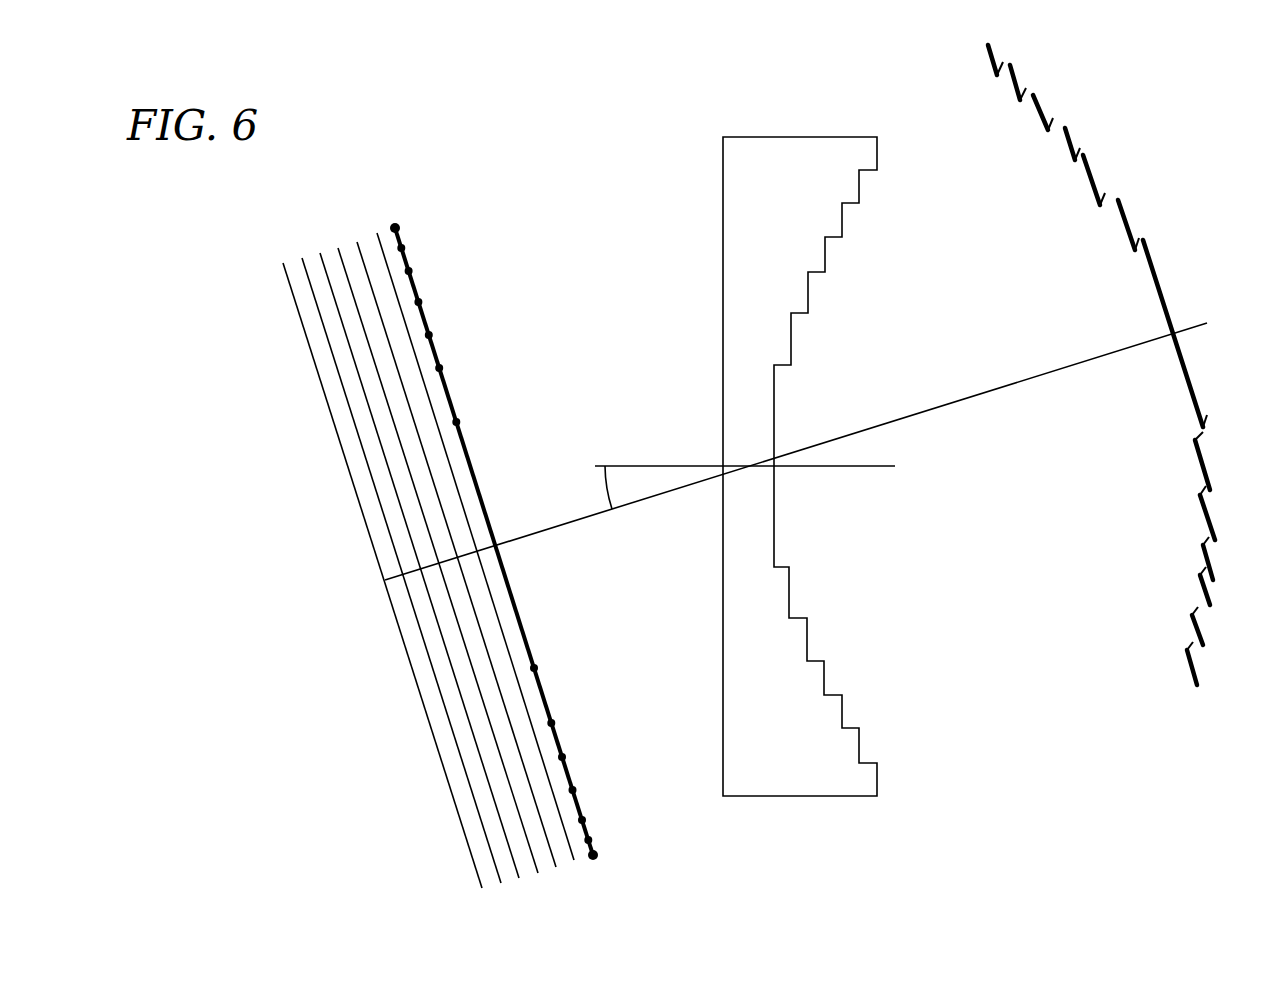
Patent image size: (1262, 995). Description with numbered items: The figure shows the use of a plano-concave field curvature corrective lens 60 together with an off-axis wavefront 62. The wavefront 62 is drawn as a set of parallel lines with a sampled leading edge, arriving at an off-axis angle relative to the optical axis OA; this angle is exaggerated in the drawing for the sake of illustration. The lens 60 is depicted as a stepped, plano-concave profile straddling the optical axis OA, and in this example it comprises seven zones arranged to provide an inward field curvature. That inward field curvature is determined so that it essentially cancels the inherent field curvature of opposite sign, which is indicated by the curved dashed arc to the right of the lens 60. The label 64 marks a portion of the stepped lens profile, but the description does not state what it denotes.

The plano-concave field curvature corrective lens 60 is at (842, 465).
The off-axis wavefront 62 is at (398, 234).
The upper stepped zone of optic 64 is at (880, 152).
The optical axis OA is at (767, 467).